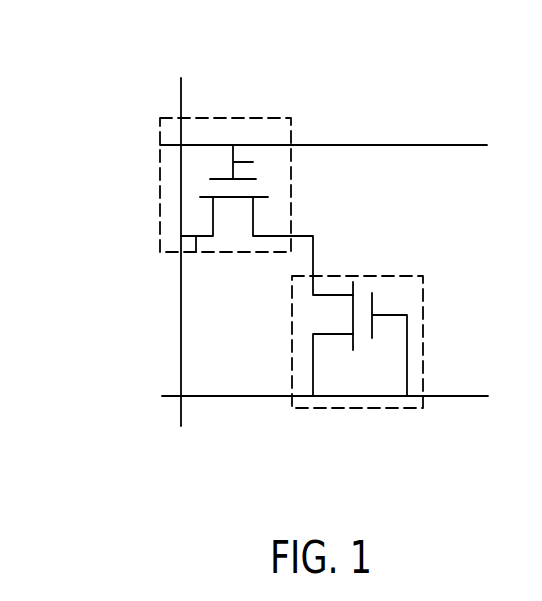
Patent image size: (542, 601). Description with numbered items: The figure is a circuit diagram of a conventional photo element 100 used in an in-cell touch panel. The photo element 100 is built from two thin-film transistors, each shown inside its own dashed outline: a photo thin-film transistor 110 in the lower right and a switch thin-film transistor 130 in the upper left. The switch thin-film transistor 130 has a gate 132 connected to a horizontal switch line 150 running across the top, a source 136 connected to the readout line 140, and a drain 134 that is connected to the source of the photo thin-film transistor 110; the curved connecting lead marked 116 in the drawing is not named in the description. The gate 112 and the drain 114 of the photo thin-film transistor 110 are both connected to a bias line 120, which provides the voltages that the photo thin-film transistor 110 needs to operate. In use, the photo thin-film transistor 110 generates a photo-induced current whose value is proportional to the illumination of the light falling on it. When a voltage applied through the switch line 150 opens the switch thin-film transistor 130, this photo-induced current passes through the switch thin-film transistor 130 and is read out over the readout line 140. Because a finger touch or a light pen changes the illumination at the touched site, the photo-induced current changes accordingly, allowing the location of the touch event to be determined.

The photo element 100 is at (106, 86).
The photo thin-film transistor 110 is at (427, 305).
The gate 112 is at (390, 315).
The drain 114 is at (313, 370).
The gate connection node 116 is at (313, 285).
The bias line 120 is at (453, 398).
The switch thin-film transistor 130 is at (222, 117).
The gate 132 is at (253, 162).
The drain 134 is at (268, 237).
The source 136 is at (196, 250).
The readout line 140 is at (181, 411).
The switch line 150 is at (412, 145).